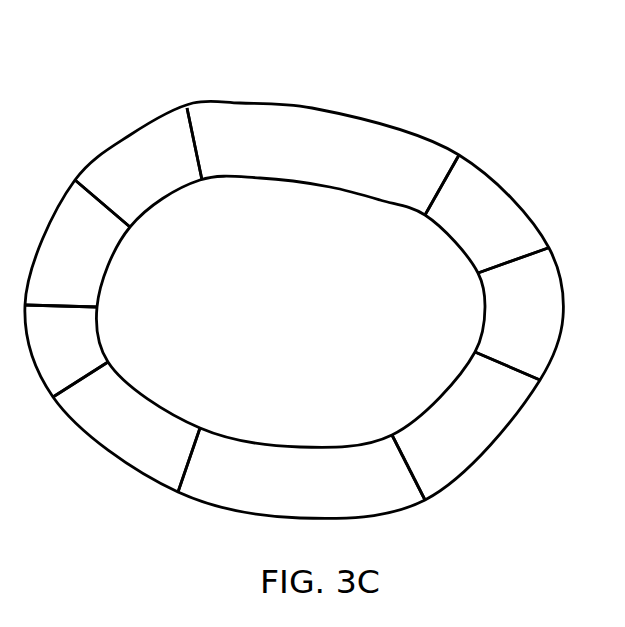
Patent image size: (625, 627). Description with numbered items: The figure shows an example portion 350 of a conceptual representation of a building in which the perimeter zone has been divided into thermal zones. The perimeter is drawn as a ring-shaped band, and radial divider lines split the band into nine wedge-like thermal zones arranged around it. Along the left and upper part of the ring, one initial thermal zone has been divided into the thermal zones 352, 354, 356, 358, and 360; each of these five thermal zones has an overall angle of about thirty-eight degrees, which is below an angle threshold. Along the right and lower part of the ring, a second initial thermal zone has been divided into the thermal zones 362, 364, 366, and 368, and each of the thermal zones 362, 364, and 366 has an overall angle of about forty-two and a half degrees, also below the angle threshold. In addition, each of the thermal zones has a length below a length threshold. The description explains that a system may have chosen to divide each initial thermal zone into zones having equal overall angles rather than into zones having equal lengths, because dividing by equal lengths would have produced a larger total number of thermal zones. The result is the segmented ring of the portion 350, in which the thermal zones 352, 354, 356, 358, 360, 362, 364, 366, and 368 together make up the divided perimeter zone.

The portion of a conceptual representation of a building 350 is at (462, 103).
The thermal zone 352 is at (99, 449).
The thermal zone 354 is at (31, 356).
The thermal zone 356 is at (47, 258).
The thermal zone 358 is at (119, 173).
The thermal zone 360 is at (319, 173).
The thermal zone 362 is at (441, 229).
The thermal zone 364 is at (486, 316).
The thermal zone 366 is at (438, 431).
The thermal zone 368 is at (293, 497).